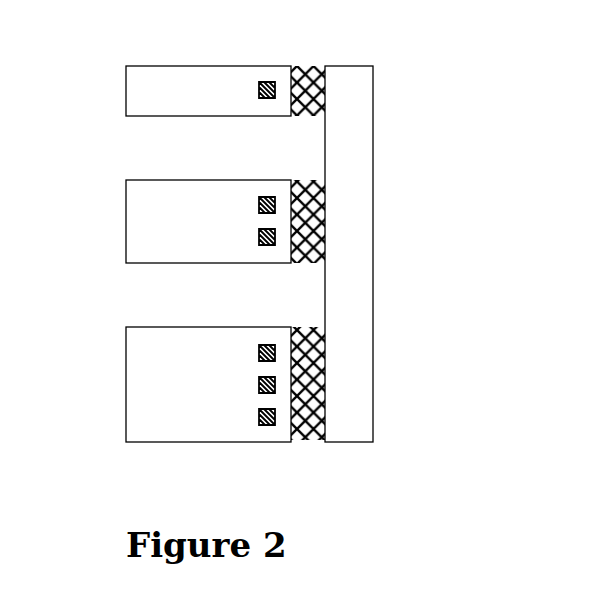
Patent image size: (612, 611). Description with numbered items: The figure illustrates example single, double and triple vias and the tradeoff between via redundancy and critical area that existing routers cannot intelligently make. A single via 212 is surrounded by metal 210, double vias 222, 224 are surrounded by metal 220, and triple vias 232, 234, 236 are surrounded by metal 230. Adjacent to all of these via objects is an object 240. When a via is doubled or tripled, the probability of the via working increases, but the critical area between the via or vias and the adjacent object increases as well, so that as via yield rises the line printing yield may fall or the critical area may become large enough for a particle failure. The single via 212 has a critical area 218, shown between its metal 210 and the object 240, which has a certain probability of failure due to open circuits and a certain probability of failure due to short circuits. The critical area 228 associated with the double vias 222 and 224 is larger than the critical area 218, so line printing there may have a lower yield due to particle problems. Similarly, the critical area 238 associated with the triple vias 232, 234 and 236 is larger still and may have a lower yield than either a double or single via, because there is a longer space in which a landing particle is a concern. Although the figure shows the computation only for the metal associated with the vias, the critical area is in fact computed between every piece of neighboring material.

The metal 210 is at (168, 93).
The single via 212 is at (259, 90).
The critical area 218 is at (314, 70).
The metal 220 is at (168, 208).
The double via 222 is at (259, 205).
The double via 224 is at (258, 246).
The critical area 228 is at (305, 187).
The metal 230 is at (168, 356).
The triple via 232 is at (259, 352).
The triple via 234 is at (258, 392).
The triple via 236 is at (259, 425).
The critical area 238 is at (305, 335).
The object 240 is at (349, 254).